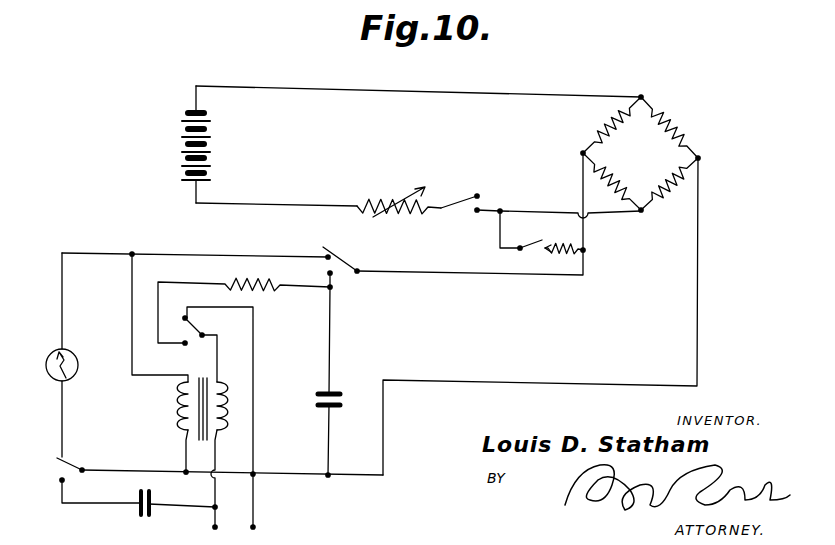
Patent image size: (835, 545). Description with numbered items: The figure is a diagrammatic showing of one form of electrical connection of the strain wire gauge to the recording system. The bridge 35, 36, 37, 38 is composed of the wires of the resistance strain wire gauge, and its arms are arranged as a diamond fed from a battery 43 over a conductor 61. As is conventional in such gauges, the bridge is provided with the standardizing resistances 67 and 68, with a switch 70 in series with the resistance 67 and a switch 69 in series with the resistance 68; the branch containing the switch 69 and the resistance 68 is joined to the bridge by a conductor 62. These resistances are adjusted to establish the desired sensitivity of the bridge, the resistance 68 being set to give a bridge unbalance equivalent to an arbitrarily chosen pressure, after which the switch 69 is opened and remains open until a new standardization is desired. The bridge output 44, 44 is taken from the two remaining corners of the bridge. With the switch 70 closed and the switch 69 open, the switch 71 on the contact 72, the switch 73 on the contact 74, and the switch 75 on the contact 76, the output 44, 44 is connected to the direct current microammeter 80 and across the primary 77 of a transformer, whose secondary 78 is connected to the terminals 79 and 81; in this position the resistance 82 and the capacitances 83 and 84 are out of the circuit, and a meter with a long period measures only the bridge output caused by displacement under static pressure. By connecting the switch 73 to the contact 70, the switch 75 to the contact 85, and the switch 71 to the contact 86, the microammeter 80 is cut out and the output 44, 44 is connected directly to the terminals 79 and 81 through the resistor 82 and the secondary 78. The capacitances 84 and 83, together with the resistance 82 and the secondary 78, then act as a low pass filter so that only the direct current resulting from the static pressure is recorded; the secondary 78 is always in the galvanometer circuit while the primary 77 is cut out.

The bridge arm 35 is at (640, 156).
The bridge arm 36 is at (612, 181).
The bridge arm 37 is at (670, 127).
The bridge arm 38 is at (611, 125).
The battery 43 is at (181, 147).
The bridge output 44 is at (580, 213).
The conductor 61 is at (567, 94).
The conductor 62 is at (530, 208).
The standardizing resistance 67 is at (392, 193).
The standardizing resistance 68 is at (551, 252).
The switch 69 is at (524, 252).
The switch 70 is at (337, 276).
The switch 71 is at (80, 466).
The contact 72 is at (57, 449).
The switch 73 is at (346, 261).
The contact 74 is at (322, 253).
The switch 75 is at (204, 328).
The contact 76 is at (185, 316).
The primary 77 is at (168, 363).
The secondary 78 is at (230, 444).
The terminal 79 is at (217, 509).
The microammeter 80 is at (54, 353).
The terminal 81 is at (256, 508).
The resistor 82 is at (277, 289).
The capacitance 83 is at (140, 519).
The capacitance 84 is at (316, 394).
The contact 85 is at (189, 349).
The contact 86 is at (60, 481).